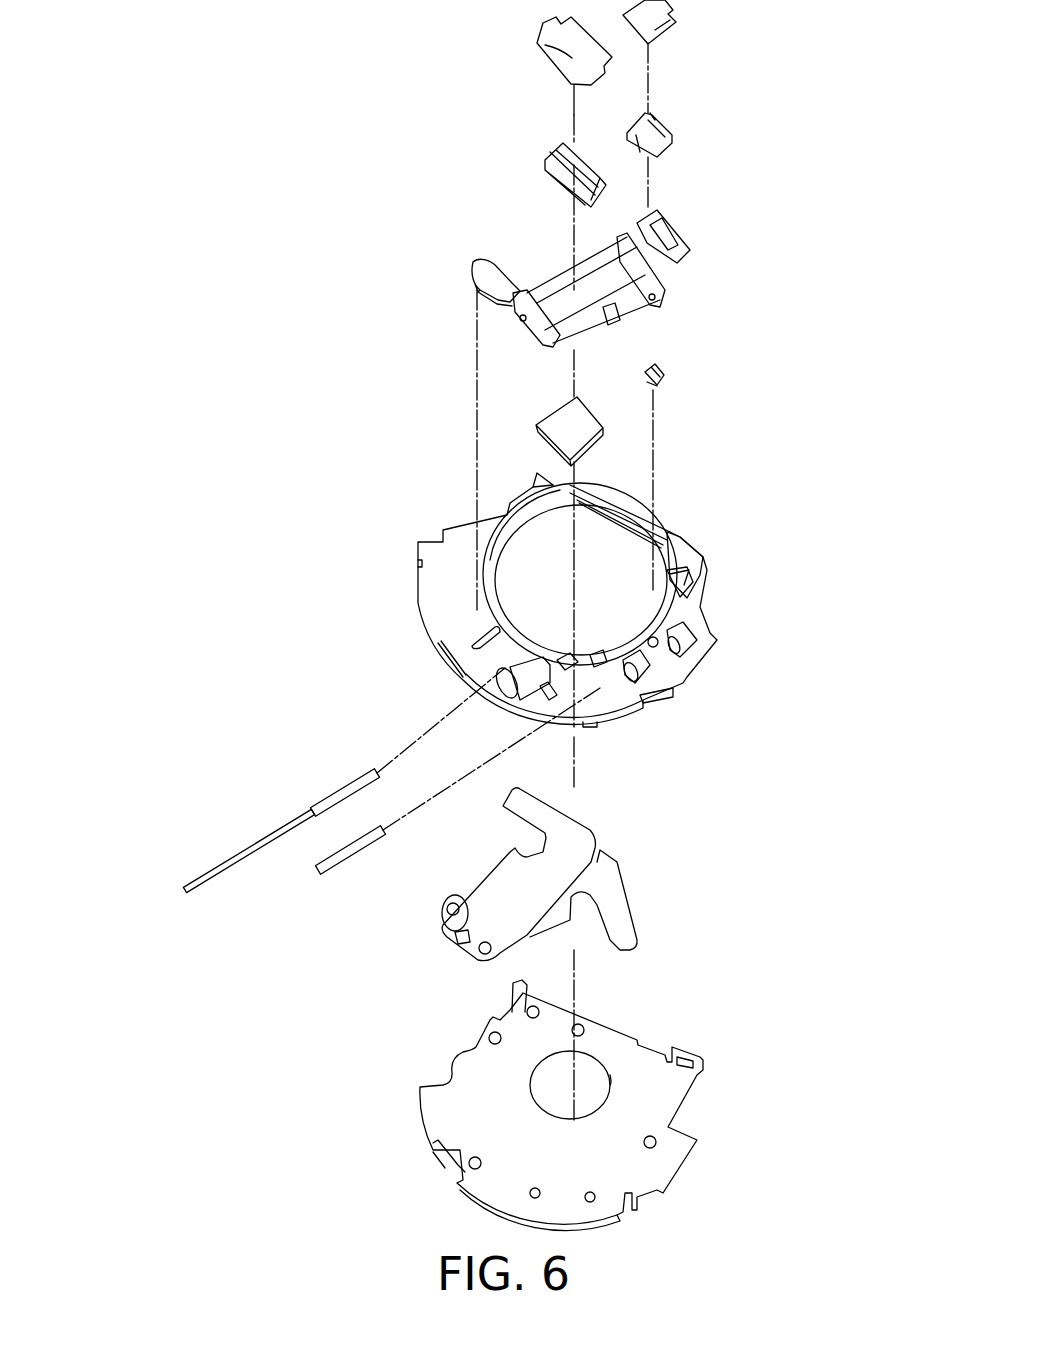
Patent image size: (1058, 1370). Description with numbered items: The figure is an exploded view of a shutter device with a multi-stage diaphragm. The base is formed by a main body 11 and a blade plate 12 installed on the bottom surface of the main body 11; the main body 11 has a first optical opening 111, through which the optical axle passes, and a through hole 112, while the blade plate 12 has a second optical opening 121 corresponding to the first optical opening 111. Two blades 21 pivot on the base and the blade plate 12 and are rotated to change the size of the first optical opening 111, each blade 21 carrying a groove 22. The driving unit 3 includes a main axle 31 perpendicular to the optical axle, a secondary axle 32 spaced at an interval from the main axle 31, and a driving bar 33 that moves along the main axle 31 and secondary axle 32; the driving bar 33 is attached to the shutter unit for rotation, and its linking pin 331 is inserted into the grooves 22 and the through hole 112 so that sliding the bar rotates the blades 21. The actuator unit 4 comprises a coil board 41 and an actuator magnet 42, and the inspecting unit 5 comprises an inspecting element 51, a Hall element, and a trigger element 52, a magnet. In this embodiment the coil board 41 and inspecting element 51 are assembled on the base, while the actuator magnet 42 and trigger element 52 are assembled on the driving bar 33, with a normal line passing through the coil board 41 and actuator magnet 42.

The driving unit 3 is at (467, 260).
The main axle 31 is at (263, 843).
The secondary axle 32 is at (357, 840).
The driving bar 33 is at (688, 233).
The linking pin 331 is at (475, 287).
The actuator unit 4 is at (583, 395).
The coil board 41 is at (586, 448).
The actuator magnet 42 is at (545, 157).
The inspecting unit 5 is at (668, 366).
The inspecting element 51 is at (658, 386).
The trigger element 52 is at (542, 44).
The main body 11 is at (446, 562).
The first optical opening 111 is at (493, 582).
The through hole 112 is at (470, 634).
The blade plate 12 is at (425, 1125).
The second optical opening 121 is at (610, 1085).
The blade 21 is at (592, 826).
The groove 22 is at (452, 897).